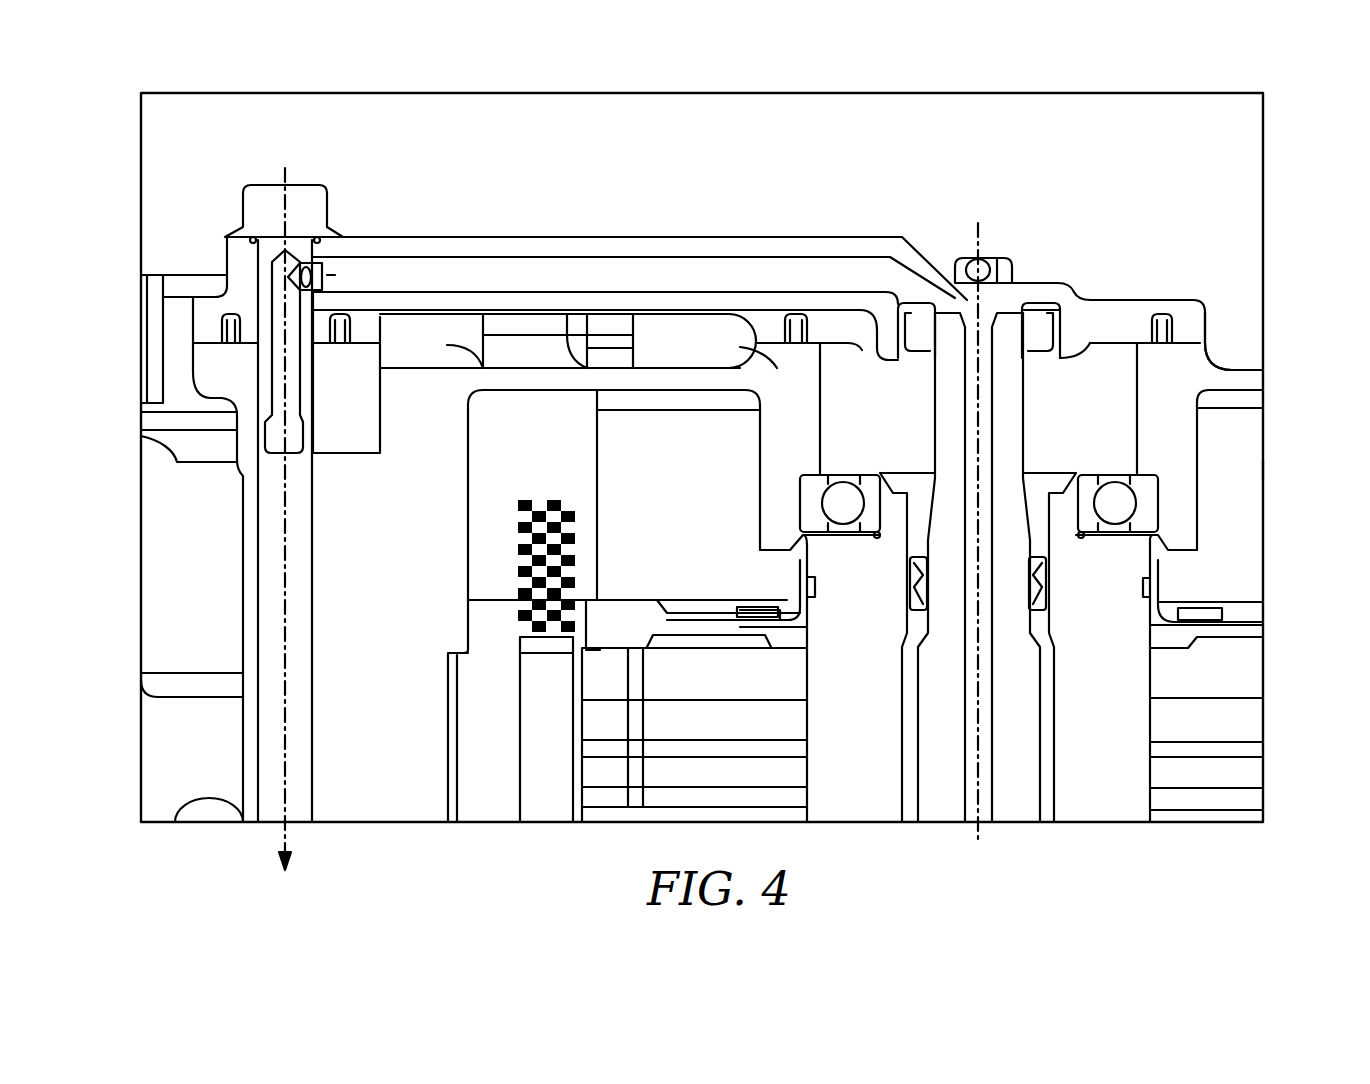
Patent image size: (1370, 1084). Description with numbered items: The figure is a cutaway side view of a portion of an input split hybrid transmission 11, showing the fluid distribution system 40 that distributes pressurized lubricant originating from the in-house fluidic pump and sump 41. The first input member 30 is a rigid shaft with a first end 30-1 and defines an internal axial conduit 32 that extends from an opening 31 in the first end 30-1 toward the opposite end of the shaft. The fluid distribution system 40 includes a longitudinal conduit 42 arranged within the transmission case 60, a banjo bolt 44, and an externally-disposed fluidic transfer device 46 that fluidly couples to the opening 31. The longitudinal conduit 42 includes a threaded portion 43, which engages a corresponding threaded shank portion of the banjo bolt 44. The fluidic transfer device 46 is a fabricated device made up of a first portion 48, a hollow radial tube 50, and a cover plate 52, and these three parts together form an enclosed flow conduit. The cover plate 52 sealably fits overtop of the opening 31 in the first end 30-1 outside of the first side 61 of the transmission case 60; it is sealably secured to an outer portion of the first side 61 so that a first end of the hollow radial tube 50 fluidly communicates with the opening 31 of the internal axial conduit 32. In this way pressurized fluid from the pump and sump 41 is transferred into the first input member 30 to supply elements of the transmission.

The electric machine assembly 11 is at (1266, 455).
The first input member 30 is at (1048, 803).
The first end 30-1 is at (1020, 312).
The opening 31 is at (968, 312).
The internal axial conduit 32 is at (973, 803).
The fluid distribution system 40 is at (1060, 272).
The in-house fluidic pump and sump 41 is at (308, 898).
The longitudinal conduit 42 is at (273, 540).
The threaded portion 43 is at (270, 392).
The banjo bolt 44 is at (297, 200).
The fluidic transfer device 46 is at (855, 240).
The first portion 48 is at (372, 237).
The hollow radial tube 50 is at (775, 237).
The cover plate 52 is at (1127, 298).
The transmission case 60 is at (1266, 385).
The first side 61 is at (1213, 357).